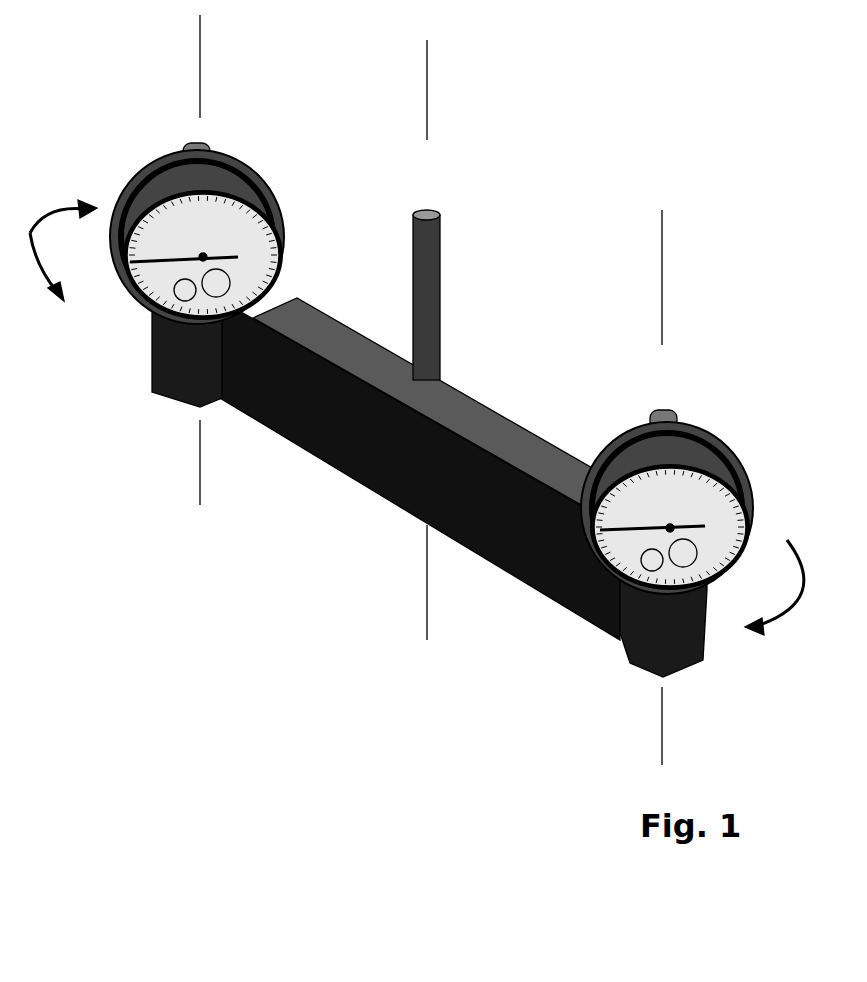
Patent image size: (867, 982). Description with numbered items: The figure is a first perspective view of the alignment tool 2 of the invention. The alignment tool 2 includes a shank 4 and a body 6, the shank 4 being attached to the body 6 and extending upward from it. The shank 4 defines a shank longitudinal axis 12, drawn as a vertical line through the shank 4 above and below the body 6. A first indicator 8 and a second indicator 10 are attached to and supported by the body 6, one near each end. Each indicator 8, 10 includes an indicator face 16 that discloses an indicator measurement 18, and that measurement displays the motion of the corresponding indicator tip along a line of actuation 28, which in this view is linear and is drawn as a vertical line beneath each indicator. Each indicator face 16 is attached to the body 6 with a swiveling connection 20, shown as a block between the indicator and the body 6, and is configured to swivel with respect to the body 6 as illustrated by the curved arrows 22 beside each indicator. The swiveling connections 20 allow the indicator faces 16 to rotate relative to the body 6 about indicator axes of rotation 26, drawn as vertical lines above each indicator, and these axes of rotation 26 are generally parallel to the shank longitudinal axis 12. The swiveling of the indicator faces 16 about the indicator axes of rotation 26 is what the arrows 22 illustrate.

The alignment tool 2 is at (545, 225).
The shank 4 is at (441, 290).
The body 6 is at (510, 568).
The first indicator 8 is at (256, 168).
The second indicator 10 is at (707, 433).
The shank longitudinal axis 12 is at (429, 137).
The indicator face 16 is at (262, 228).
The indicator measurement 18 is at (123, 290).
The swiveling connection 20 is at (150, 317).
The arrows 22 is at (25, 228).
The indicator axis of rotation 26 is at (202, 103).
The line of actuation 28 is at (198, 463).